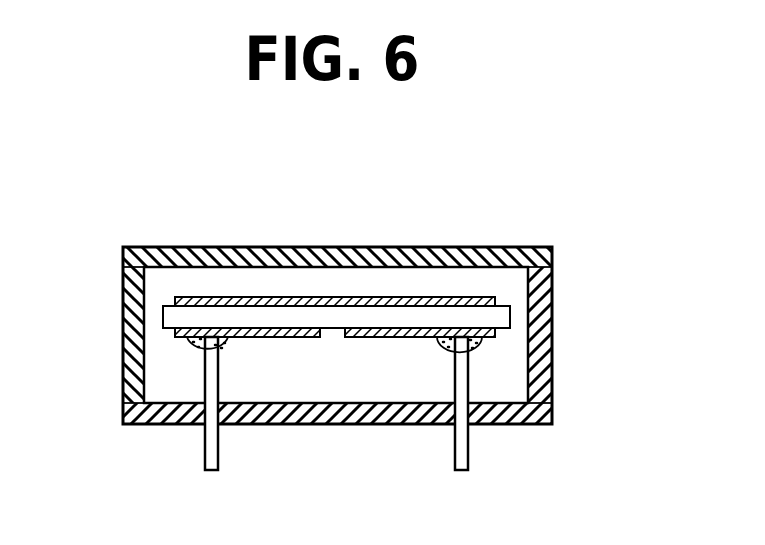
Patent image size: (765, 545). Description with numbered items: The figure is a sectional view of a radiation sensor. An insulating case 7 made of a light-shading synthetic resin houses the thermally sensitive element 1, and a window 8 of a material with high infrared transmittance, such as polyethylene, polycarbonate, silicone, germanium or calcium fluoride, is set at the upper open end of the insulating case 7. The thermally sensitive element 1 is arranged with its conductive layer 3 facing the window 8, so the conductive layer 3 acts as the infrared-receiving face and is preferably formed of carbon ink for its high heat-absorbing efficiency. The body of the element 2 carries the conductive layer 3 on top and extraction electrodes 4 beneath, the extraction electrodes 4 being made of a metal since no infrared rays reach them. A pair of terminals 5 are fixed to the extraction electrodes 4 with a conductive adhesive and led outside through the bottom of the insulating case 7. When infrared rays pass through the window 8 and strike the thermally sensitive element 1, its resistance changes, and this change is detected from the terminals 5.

The thermally sensitive element 1 is at (278, 318).
The substrate 2 is at (168, 317).
The conductive layer 3 is at (362, 297).
The extraction electrodes 4 is at (277, 340).
The terminals 5 is at (208, 447).
The insulating case 7 is at (384, 296).
The window 8 is at (243, 247).